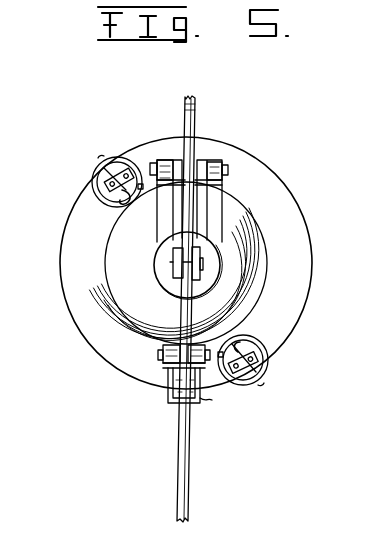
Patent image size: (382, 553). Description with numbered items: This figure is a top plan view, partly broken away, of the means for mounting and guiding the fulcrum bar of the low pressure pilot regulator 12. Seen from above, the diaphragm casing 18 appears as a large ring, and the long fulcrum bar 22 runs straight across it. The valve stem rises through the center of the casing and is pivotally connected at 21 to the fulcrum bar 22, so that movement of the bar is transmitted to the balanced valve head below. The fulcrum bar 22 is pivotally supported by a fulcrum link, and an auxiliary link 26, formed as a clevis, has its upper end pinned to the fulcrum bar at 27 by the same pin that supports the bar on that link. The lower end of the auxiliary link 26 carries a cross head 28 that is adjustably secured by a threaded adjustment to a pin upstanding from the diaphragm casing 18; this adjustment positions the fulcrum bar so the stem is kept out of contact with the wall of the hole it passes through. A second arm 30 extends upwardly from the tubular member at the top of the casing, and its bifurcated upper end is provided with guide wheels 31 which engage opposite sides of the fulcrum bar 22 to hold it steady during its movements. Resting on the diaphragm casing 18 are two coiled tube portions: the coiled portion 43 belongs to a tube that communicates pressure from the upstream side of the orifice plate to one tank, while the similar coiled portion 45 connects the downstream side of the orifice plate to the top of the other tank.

The low pressure pilot regulator 12 is at (314, 299).
The diaphragm casing 18 is at (296, 236).
The pivotal connection 21 is at (170, 270).
The fulcrum bar 22 is at (191, 124).
The auxiliary link 26 is at (172, 386).
The pin connection 27 is at (164, 362).
The cross head 28 is at (205, 396).
The second arm 30 is at (162, 215).
The guide wheels 31 is at (156, 163).
The coiled portion 43 is at (270, 362).
The coiled portion 45 is at (94, 178).